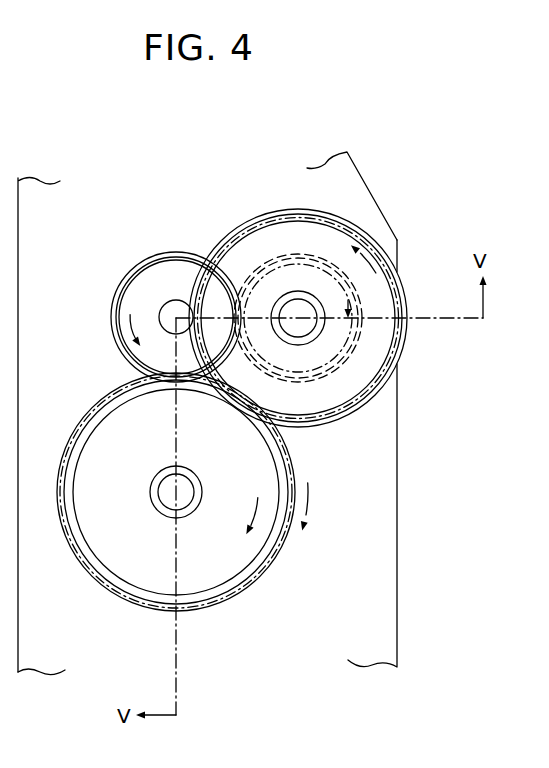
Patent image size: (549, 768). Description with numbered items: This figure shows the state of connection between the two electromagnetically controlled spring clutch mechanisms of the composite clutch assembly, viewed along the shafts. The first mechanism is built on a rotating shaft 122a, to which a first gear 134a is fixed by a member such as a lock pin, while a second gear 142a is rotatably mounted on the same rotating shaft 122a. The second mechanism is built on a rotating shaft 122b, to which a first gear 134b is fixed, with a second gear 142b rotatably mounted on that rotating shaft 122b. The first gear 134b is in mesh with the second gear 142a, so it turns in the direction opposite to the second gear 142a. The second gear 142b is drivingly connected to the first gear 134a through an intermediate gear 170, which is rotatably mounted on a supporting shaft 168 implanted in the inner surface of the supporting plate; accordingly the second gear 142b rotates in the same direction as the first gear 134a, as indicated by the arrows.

The rotating shaft 122a is at (167, 503).
The rotating shaft 122b is at (305, 333).
The first gear 134a is at (273, 562).
The first gear 134b is at (273, 230).
The second gear 142a is at (210, 573).
The second gear 142b is at (363, 336).
The supporting shaft 168 is at (158, 305).
The intermediate gear 170 is at (147, 282).